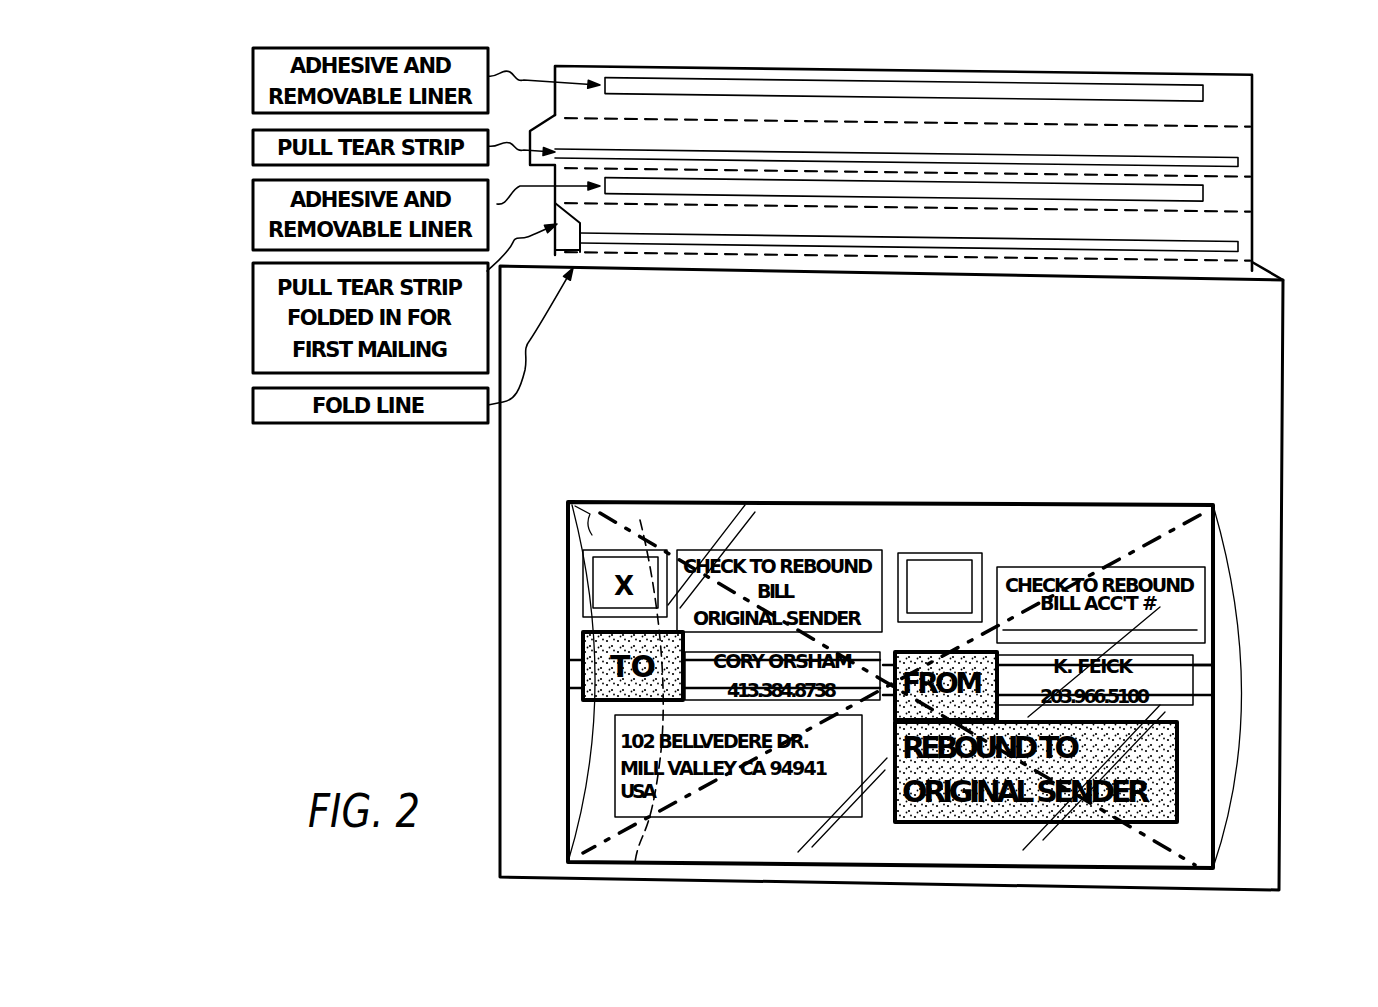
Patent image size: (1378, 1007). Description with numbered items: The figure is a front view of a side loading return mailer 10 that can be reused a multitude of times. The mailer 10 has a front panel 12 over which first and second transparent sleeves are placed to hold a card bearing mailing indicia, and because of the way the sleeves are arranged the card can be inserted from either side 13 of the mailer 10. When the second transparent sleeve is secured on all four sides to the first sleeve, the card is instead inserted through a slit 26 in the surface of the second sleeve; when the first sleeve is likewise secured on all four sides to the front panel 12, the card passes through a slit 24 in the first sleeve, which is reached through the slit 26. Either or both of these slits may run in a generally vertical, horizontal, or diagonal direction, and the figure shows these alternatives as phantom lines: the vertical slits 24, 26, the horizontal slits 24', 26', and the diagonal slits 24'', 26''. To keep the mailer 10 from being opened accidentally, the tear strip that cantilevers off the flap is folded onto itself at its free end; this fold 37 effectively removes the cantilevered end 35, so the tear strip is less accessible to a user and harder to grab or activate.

The return mailer 10 is at (1292, 171).
The front panel 12 is at (657, 340).
The side 13 is at (566, 702).
The slit 24 is at (661, 659).
The slit 24' is at (1260, 632).
The slit 24'' is at (891, 663).
The slit 26 is at (556, 683).
The slit 26' is at (1259, 686).
The slit 26'' is at (897, 719).
The cantilevered end 35 is at (542, 124).
The fold 37 is at (570, 232).